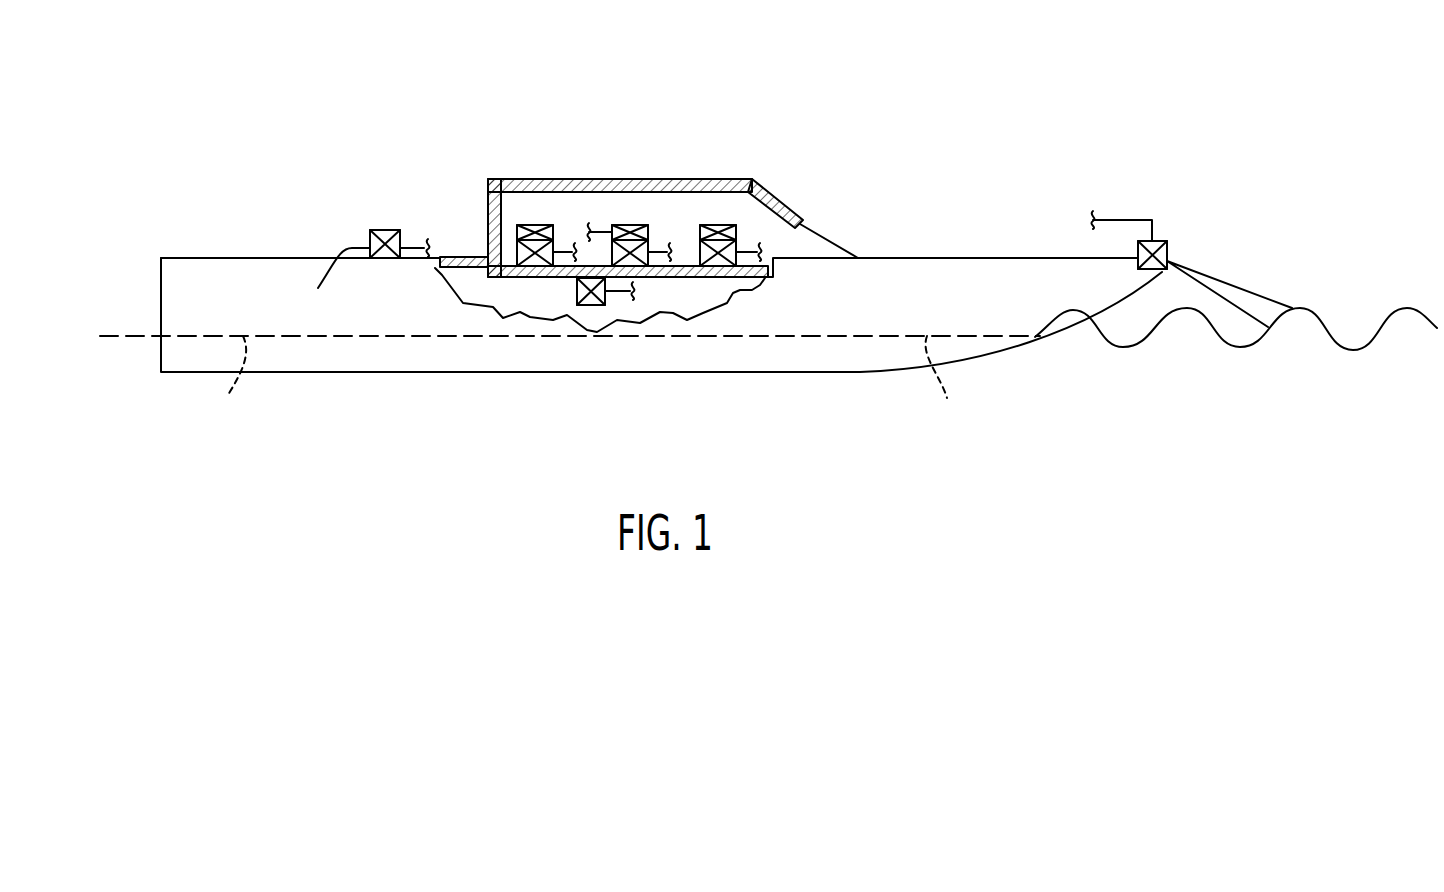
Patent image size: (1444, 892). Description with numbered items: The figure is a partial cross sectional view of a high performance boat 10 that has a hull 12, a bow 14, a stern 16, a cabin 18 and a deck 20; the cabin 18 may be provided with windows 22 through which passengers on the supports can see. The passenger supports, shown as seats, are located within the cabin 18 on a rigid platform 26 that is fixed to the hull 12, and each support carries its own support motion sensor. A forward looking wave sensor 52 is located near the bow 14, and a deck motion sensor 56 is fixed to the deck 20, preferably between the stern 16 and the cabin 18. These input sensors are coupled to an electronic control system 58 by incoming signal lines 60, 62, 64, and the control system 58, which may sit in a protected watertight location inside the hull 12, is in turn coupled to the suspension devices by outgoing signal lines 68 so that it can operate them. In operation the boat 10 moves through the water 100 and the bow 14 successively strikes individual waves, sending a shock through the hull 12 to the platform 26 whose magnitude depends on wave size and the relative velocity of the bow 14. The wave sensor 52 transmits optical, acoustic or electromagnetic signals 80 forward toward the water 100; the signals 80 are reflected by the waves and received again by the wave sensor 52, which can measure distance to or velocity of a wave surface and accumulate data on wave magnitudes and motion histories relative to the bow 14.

The high performance boat 10 is at (828, 110).
The hull 12 is at (963, 273).
The bow 14 is at (1122, 290).
The stern 16 is at (173, 305).
The cabin 18 is at (563, 180).
The deck 20 is at (243, 258).
The windows 22 is at (797, 218).
The platform 26 is at (733, 283).
The forward looking wave sensor 52 is at (1170, 245).
The deck motion sensor 56 is at (343, 270).
The electronic control system 58 is at (590, 305).
The incoming signal line 60 is at (1119, 220).
The incoming signal line 62 is at (411, 238).
The incoming signal line 64 is at (590, 228).
The outgoing signal lines 68 is at (620, 290).
The signals 80 is at (1235, 287).
The water 100 is at (570, 392).